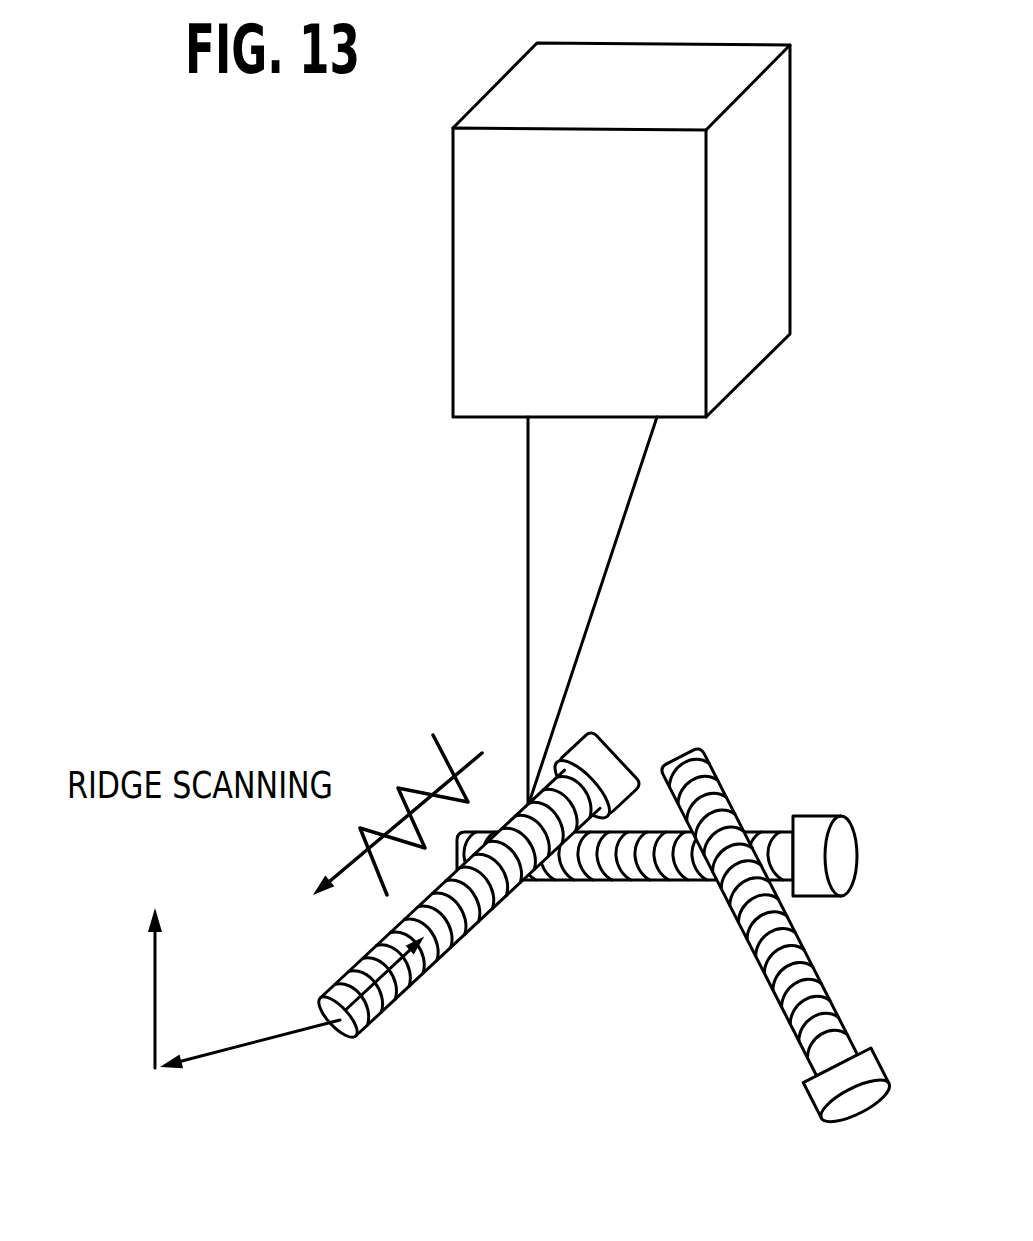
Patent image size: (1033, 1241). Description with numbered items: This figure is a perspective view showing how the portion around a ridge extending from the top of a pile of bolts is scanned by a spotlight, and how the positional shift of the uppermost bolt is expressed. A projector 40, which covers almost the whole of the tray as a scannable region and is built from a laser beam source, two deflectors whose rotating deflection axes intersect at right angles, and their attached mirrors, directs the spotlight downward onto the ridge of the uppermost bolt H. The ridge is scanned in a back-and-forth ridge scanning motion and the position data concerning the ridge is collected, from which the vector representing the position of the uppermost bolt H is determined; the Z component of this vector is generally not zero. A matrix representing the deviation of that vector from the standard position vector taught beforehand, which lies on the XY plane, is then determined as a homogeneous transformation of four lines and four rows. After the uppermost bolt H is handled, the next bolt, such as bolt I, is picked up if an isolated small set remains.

The projector 40 is at (790, 193).
The uppermost bolt H is at (500, 900).
The bolt I is at (833, 1005).